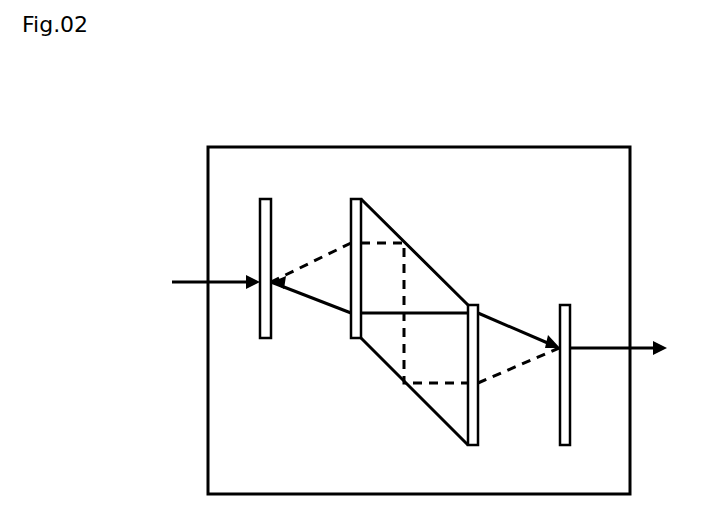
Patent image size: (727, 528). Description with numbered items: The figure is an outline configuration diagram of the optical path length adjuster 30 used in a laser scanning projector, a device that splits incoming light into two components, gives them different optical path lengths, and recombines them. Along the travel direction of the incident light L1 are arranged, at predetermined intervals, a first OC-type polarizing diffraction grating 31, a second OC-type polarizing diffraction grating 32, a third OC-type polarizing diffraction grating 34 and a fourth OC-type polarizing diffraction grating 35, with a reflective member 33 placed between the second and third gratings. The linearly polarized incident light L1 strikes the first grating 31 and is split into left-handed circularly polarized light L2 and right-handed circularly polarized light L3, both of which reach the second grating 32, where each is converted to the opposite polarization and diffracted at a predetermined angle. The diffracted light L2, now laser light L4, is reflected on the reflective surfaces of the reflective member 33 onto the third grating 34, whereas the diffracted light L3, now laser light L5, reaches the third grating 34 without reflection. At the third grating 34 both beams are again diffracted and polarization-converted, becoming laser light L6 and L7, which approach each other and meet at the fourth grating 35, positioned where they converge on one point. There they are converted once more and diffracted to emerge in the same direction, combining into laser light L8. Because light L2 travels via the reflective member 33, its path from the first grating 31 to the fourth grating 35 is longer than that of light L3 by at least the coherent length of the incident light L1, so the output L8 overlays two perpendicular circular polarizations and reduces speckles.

The optical path length adjuster 30 is at (610, 146).
The first OC-type polarizing diffraction grating 31 is at (265, 340).
The second OC-type polarizing diffraction grating 32 is at (356, 197).
The reflective member 33 is at (437, 262).
The third OC-type polarizing diffraction grating 34 is at (472, 447).
The fourth OC-type polarizing diffraction grating 35 is at (562, 447).
The incident light L1 is at (215, 271).
The left-handed circularly polarized light L2 is at (369, 307).
The right-handed circularly polarized light L3 is at (311, 308).
The laser light L4 is at (386, 265).
The laser light L5 is at (414, 328).
The laser light L6 is at (518, 373).
The laser light L7 is at (519, 326).
The laser light L8 is at (618, 336).